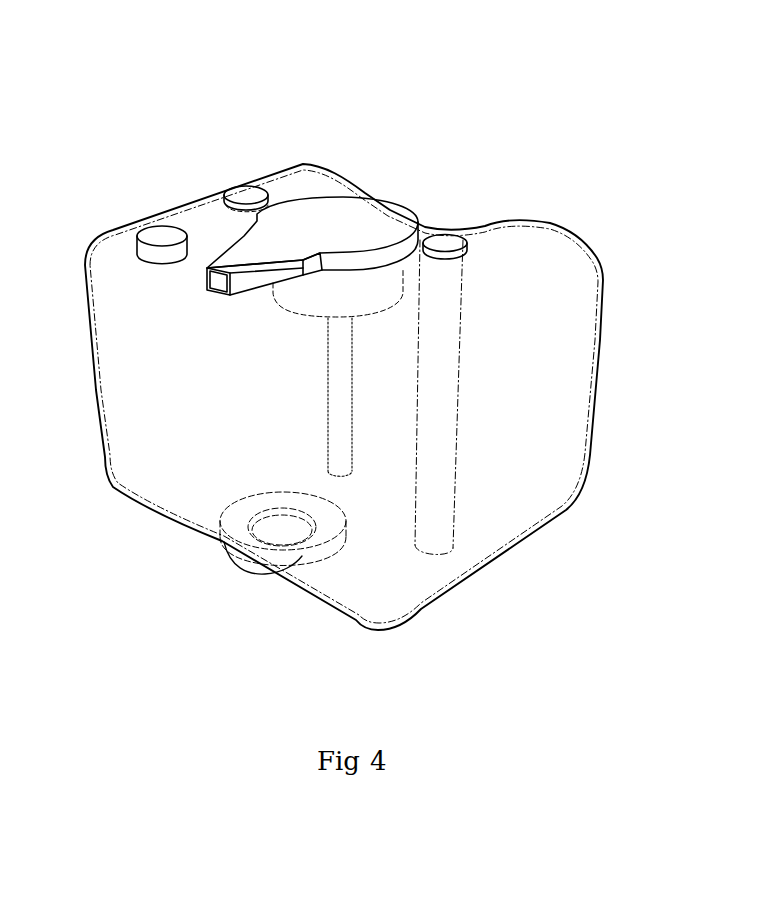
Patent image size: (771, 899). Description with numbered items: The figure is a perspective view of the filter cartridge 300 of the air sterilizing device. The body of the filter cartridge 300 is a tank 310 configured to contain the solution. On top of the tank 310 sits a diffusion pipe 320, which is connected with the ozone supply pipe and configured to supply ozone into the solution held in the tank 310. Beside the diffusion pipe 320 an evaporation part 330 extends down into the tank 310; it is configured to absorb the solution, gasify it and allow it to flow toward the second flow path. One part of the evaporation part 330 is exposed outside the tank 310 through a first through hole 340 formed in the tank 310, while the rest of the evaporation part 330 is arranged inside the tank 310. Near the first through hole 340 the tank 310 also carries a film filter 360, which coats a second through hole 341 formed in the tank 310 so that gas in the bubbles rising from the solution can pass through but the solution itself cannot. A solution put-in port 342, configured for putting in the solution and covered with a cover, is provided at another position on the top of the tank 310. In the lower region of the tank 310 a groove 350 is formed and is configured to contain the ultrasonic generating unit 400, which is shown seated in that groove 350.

The filter cartridge 300 is at (132, 38).
The tank 310 is at (601, 347).
The diffusion pipe 320 is at (323, 212).
The evaporation part 330 is at (445, 332).
The first through hole 340 is at (448, 262).
The second through hole 341 is at (258, 208).
The solution put-in port 342 is at (158, 260).
The groove 350 is at (313, 564).
The film filter 360 is at (243, 185).
The ultrasonic generating unit 400 is at (267, 574).